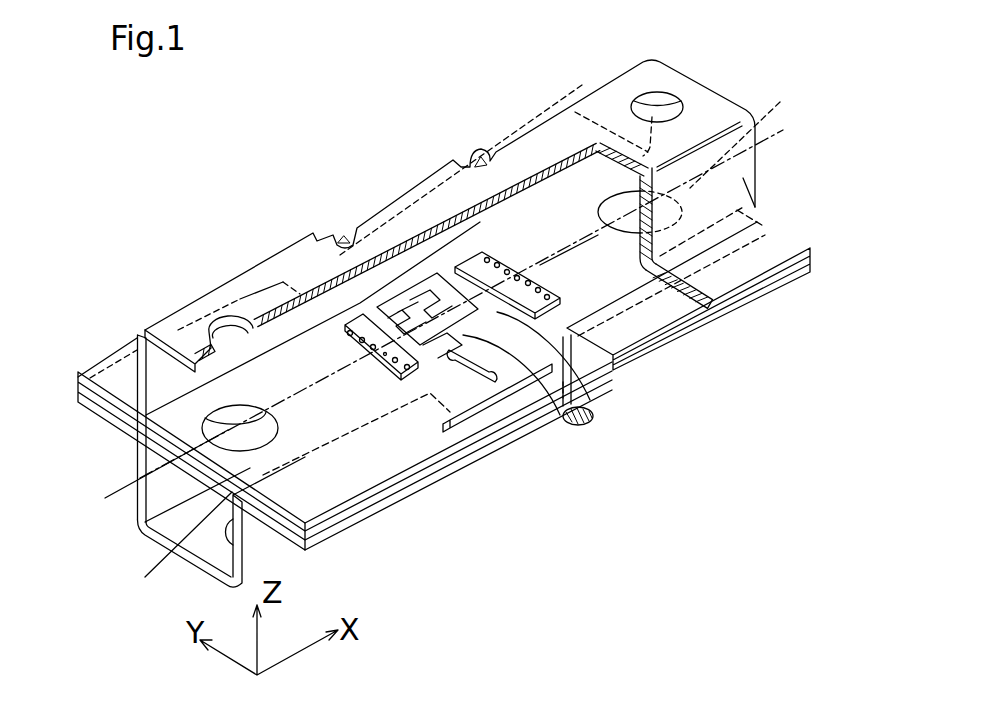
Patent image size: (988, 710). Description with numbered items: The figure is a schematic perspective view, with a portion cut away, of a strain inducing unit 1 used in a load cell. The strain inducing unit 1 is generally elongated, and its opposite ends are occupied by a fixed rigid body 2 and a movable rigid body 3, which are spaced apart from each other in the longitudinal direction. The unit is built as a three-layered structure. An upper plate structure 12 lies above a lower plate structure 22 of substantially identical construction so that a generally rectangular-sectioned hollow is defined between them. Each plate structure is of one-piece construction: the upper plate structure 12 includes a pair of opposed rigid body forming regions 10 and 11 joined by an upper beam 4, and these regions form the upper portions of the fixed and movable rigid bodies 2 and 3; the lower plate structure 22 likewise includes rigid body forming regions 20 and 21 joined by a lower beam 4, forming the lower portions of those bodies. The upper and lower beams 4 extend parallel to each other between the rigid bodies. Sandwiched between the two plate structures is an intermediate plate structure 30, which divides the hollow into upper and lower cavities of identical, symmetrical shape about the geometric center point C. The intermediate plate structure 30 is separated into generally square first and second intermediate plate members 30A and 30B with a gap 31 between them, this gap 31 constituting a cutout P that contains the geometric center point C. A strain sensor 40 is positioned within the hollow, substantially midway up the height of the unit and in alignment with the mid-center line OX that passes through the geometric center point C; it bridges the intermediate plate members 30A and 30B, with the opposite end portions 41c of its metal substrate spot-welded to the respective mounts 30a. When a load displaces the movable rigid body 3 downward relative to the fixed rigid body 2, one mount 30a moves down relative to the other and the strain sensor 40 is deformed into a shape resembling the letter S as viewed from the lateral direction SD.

The strain inducing unit 1 is at (385, 97).
The fixed rigid body 2 is at (858, 200).
The movable rigid body 3 is at (58, 468).
The beam 4 is at (372, 222).
The rigid body forming region 10 is at (596, 93).
The rigid body forming region 11 is at (253, 307).
The upper plate structure 12 is at (460, 77).
The rigid body forming region 20 is at (672, 353).
The rigid body forming region 21 is at (137, 513).
The lower plate structure 22 is at (657, 460).
The intermediate plate structure 30 is at (463, 365).
The first intermediate plate member 30A is at (788, 136).
The second intermediate plate member 30B is at (137, 528).
The mount 30a is at (447, 405).
The gap 31 is at (581, 421).
The strain sensor 40 is at (528, 267).
The end portion 41c is at (175, 553).
The geometric center point C is at (448, 312).
The cutout P is at (583, 375).
The mid-center line OX is at (780, 135).
The lateral direction SD is at (706, 428).